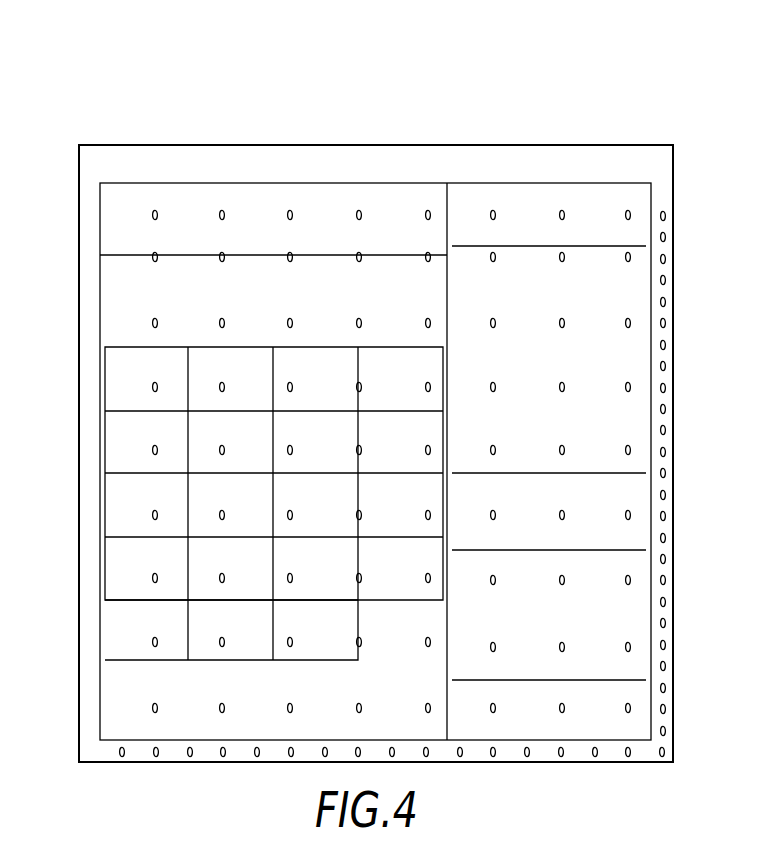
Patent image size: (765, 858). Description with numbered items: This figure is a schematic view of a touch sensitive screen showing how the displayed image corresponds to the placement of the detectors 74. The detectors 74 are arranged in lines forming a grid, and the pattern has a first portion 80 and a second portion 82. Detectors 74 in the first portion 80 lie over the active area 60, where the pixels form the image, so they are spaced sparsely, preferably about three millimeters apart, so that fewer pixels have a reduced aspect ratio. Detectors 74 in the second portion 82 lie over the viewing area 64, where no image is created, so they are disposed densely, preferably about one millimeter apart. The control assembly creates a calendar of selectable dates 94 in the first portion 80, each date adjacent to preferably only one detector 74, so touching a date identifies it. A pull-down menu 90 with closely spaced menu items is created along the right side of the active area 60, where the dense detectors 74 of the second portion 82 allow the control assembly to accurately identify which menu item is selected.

The active area 60 is at (108, 233).
The viewing area 64 is at (529, 150).
The detectors 74 is at (155, 383).
The first portion 80 is at (360, 138).
The second portion 82 is at (661, 138).
The pull-down menu 90 is at (638, 276).
The selectable dates 94 is at (118, 383).